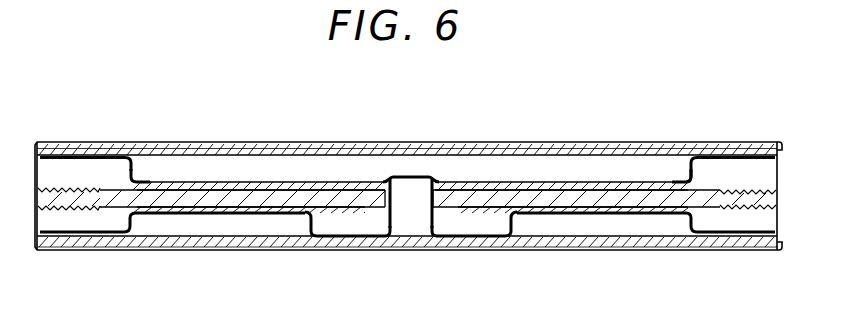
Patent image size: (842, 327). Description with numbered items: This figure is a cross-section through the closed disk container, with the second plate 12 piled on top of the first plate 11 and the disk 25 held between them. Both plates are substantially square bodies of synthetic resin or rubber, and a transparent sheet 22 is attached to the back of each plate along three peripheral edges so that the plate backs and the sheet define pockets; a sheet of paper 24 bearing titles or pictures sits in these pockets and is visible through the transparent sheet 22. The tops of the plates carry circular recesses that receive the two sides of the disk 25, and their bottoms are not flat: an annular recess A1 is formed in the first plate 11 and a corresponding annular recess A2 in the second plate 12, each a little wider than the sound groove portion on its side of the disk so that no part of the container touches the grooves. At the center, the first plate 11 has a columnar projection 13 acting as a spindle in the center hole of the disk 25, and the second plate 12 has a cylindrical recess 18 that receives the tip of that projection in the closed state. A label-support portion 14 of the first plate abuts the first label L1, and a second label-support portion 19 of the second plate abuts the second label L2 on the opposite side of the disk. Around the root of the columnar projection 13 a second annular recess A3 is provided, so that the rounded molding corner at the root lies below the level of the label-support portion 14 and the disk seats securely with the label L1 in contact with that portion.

The first plate 11 is at (778, 246).
The second plate 12 is at (779, 143).
The columnar projection 13 is at (426, 214).
The label-support portion 14 is at (190, 207).
The cylindrical recess 18 is at (406, 176).
The second label-support portion 19 is at (229, 182).
The transparent sheet 22 is at (468, 152).
The sheet of paper 24 is at (305, 152).
The disk 25 is at (58, 197).
The annular recess A1 is at (81, 234).
The annular recess A2 is at (74, 164).
The second annular recess A3 is at (361, 236).
The first label L1 is at (344, 211).
The second label L2 is at (129, 180).